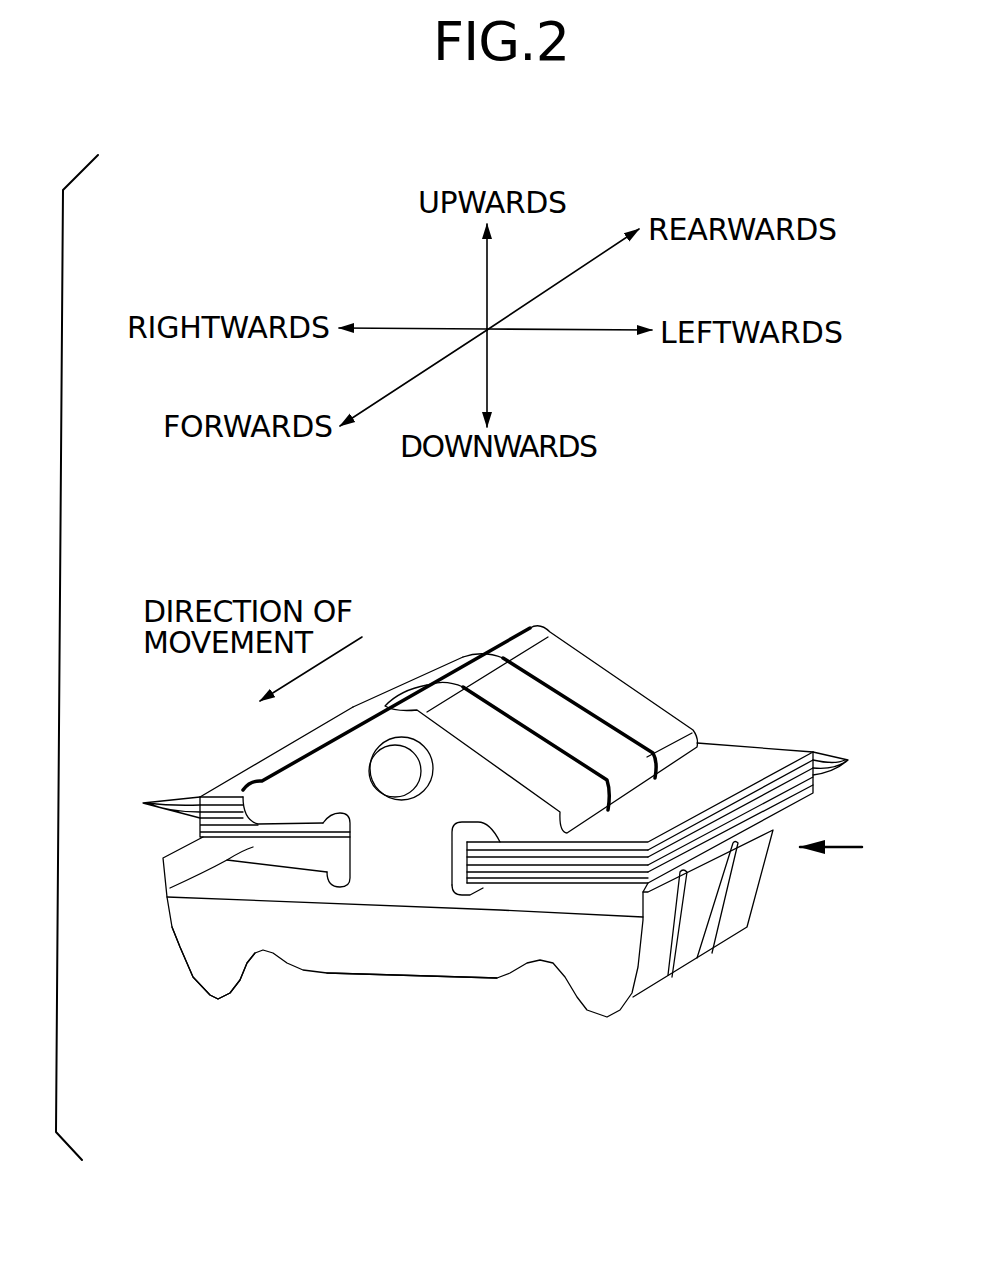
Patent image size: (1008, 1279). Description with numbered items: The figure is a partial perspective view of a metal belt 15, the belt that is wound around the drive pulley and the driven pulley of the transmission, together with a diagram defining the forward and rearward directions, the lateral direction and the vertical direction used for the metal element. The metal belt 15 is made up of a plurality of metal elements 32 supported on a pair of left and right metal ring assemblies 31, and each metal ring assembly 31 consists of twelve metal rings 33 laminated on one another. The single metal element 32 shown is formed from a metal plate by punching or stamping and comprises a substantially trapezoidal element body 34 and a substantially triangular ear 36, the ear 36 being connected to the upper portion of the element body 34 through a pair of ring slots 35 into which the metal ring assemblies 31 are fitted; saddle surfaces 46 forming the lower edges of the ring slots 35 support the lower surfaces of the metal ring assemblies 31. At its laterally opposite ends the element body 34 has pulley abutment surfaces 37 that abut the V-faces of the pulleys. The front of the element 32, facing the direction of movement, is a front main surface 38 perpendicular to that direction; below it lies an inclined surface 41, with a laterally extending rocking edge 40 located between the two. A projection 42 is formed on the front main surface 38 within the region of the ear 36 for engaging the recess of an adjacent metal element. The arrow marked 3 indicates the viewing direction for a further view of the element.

The section view direction arrow 3 is at (850, 850).
The metal belt 15 is at (457, 607).
The metal ring assembly 31 is at (221, 781).
The metal element 32 is at (509, 1007).
The metal ring 33 is at (494, 784).
The element body 34 is at (208, 959).
The ring slot 35 is at (327, 872).
The ear 36 is at (410, 684).
The pulley abutment surface 37 is at (647, 960).
The front main surface 38 is at (400, 878).
The rocking edge 40 is at (307, 903).
The inclined surface 41 is at (387, 963).
The projection 42 is at (393, 772).
The saddle surface 46 is at (255, 845).